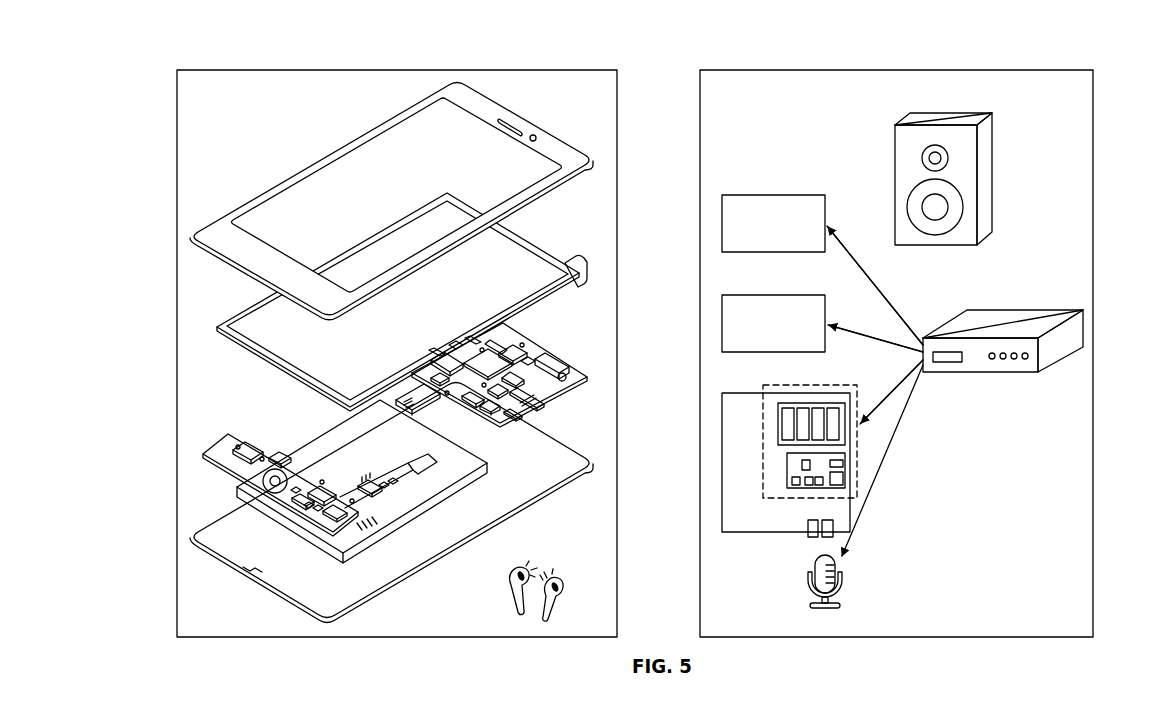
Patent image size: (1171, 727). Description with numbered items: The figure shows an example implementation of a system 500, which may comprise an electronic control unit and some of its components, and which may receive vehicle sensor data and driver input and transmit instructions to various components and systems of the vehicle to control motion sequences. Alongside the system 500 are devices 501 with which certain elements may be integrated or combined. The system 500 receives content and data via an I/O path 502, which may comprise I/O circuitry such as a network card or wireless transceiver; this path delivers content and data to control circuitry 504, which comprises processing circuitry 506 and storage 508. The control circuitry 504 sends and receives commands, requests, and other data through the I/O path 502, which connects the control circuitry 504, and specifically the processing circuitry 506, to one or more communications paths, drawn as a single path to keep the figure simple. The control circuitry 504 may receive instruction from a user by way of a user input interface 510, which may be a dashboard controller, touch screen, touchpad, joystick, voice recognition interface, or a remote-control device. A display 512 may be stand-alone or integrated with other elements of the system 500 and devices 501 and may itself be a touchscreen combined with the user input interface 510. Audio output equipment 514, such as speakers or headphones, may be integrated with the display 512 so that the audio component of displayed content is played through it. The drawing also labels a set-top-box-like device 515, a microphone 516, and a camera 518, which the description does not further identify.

The system 500 is at (249, 42).
The devices 501 is at (1021, 52).
The I/O path 502 is at (303, 476).
The control circuitry 504 is at (762, 483).
The processing circuitry 506 is at (785, 468).
The storage 508 is at (490, 362).
The user input interface 510 is at (517, 273).
The display 512 is at (718, 327).
The audio output equipment 514 is at (890, 175).
The set-top box 515 is at (1027, 310).
The microphone 516 is at (300, 490).
The camera 518 is at (546, 143).